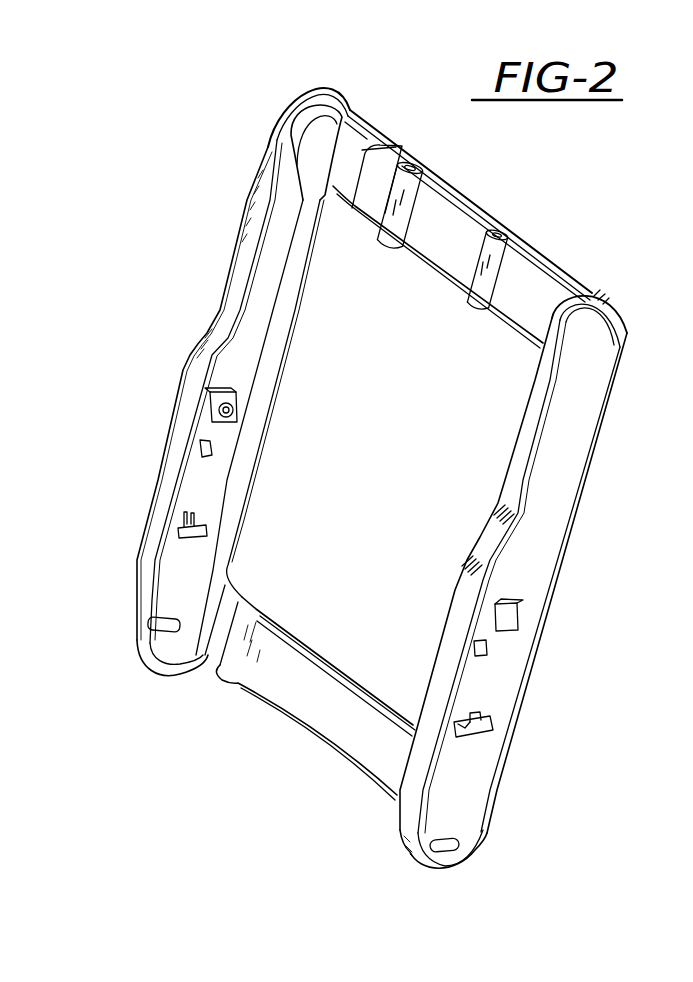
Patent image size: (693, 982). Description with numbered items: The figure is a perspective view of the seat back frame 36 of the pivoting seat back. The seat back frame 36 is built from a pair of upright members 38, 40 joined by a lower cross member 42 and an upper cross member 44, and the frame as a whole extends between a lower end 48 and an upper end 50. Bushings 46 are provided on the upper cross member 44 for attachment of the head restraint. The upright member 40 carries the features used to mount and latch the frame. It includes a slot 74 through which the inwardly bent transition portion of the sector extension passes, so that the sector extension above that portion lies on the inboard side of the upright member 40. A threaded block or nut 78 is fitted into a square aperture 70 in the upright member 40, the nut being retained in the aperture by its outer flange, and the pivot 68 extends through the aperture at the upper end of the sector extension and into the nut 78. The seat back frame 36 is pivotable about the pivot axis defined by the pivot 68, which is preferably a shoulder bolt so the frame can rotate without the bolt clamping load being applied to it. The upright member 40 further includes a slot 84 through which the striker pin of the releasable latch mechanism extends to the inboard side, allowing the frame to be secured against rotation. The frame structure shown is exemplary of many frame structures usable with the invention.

The seat back frame 36 is at (377, 501).
The upright member 38 is at (504, 554).
The upright member 40 is at (160, 470).
The lower cross member 42 is at (300, 733).
The upper cross member 44 is at (470, 203).
The bushings 46 is at (410, 222).
The lower end 48 is at (424, 868).
The upper end 50 is at (597, 293).
The pivot 68 is at (233, 418).
The square aperture 70 is at (520, 617).
The slot 74 is at (207, 514).
The nut 78 is at (233, 390).
The slot 84 is at (150, 608).